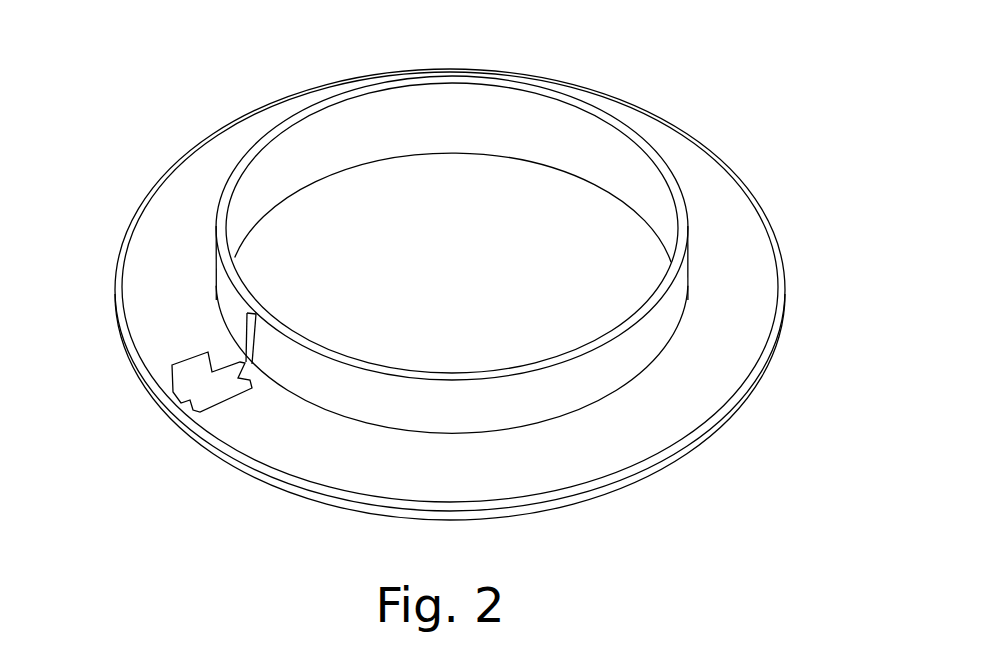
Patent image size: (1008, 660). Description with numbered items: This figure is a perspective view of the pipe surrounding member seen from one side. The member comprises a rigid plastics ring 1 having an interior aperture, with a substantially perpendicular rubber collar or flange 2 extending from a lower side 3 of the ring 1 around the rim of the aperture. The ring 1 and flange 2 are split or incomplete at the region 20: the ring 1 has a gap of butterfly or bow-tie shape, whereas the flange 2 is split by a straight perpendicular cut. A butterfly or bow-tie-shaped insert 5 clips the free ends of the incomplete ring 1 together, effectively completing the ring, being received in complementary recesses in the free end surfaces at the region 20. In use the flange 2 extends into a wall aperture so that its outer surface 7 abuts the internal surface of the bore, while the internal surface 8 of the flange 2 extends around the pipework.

The ring 1 is at (752, 231).
The flange 2 is at (552, 73).
The lower side 3 is at (272, 457).
The insert 5 is at (175, 392).
The outer surface 7 is at (578, 389).
The internal surface 8 is at (243, 197).
The region 20 is at (288, 293).